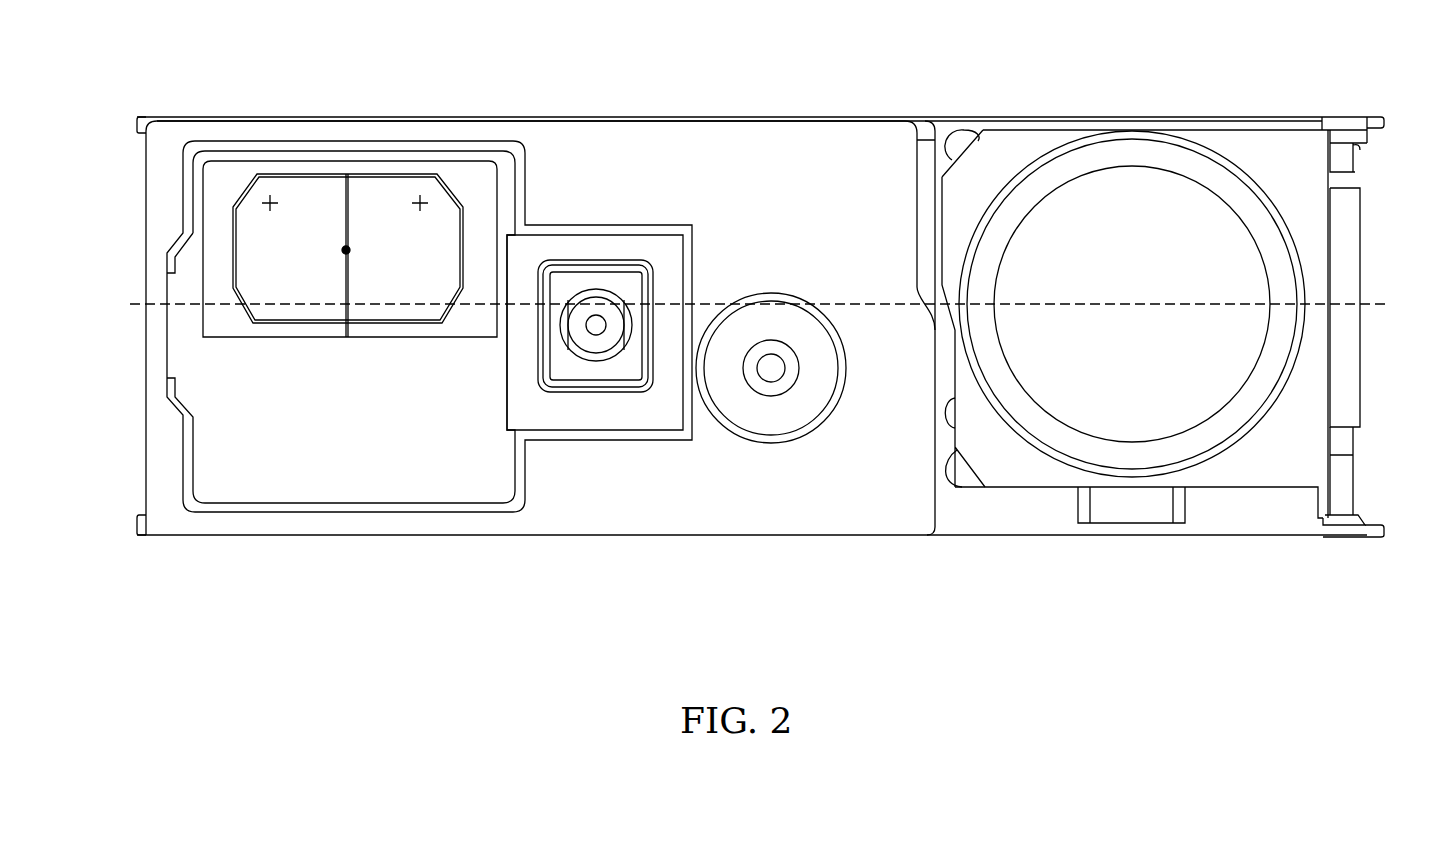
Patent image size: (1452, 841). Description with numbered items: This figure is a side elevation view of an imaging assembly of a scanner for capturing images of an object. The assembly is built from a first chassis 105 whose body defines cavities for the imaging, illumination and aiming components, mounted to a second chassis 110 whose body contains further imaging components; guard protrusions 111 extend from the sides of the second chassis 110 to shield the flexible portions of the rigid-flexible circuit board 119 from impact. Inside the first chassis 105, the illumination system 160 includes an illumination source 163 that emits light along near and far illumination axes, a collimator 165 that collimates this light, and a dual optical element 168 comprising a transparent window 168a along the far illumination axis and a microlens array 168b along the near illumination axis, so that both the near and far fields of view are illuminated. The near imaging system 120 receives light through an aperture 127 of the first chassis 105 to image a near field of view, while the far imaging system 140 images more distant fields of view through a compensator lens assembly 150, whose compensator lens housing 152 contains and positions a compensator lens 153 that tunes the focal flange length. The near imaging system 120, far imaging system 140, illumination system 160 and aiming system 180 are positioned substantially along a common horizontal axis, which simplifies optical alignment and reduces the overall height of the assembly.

The first chassis 105 is at (936, 537).
The second chassis 110 is at (932, 117).
The guard protrusions 111 is at (137, 125).
The rigid-flexible circuit board 119 is at (1360, 200).
The near imaging system 120 is at (768, 454).
The aperture 127 is at (822, 405).
The far imaging system 140 is at (1093, 544).
The compensator lens assembly 150 is at (1010, 130).
The compensator lens housing 152 is at (1300, 137).
The compensator lens 153 is at (1197, 143).
The illumination system 160 is at (198, 108).
The illumination source 163 is at (348, 247).
The collimator 165 is at (453, 190).
The dual optical element 168 is at (190, 512).
The transparent window 168a is at (285, 161).
The microlens array 168b is at (272, 449).
The aiming system 180 is at (573, 470).